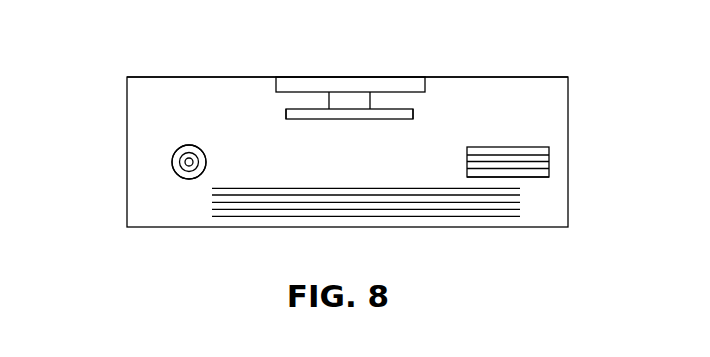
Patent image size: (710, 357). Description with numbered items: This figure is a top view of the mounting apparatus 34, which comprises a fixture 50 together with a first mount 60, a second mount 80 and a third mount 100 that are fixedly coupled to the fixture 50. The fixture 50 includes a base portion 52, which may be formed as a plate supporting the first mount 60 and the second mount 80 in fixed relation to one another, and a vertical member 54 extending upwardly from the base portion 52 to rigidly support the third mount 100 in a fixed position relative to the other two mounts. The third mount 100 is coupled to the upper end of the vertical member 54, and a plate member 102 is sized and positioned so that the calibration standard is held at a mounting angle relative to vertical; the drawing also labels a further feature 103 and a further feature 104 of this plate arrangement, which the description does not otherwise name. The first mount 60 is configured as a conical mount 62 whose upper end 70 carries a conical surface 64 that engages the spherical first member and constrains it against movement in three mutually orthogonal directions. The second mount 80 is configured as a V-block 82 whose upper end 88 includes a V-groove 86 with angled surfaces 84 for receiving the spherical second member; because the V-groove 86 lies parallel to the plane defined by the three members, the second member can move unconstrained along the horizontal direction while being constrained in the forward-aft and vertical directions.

The mounting apparatus 34 is at (545, 77).
The fixture 50 is at (568, 227).
The base portion 52 is at (558, 202).
The vertical member 54 is at (295, 84).
The first mount 60 is at (178, 177).
The conical mount 62 is at (190, 177).
The conical surface 64 is at (173, 162).
The upper end 70 is at (177, 148).
The second mount 80 is at (548, 147).
The V-block 82 is at (550, 173).
The angled surfaces 84 is at (518, 163).
The V-groove 86 is at (482, 163).
The upper end 88 is at (513, 152).
The third mount 100 is at (413, 115).
The plate member 102 is at (383, 119).
The connecting posts 103 is at (352, 102).
The lower plate end 104 is at (309, 119).